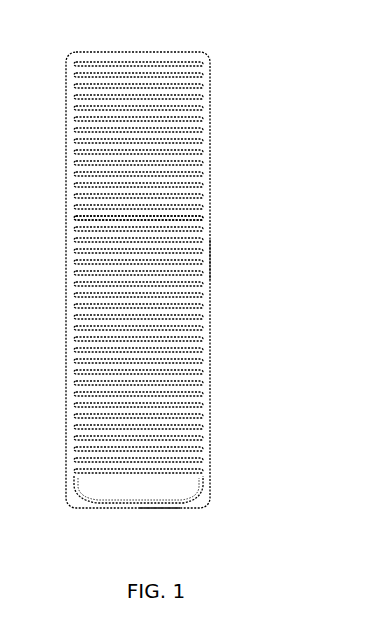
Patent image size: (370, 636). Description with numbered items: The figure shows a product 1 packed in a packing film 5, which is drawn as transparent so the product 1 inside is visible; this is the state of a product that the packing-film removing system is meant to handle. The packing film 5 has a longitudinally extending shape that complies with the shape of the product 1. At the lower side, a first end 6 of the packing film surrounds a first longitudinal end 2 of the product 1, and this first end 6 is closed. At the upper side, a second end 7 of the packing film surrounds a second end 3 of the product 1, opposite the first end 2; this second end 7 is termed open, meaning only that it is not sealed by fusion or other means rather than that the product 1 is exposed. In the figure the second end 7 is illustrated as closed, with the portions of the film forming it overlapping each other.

The product 1 is at (163, 216).
The first longitudinal end 2 is at (114, 504).
The second end 3 is at (112, 62).
The packing film 5 is at (210, 259).
The first end 6 is at (158, 508).
The second end 7 is at (157, 52).